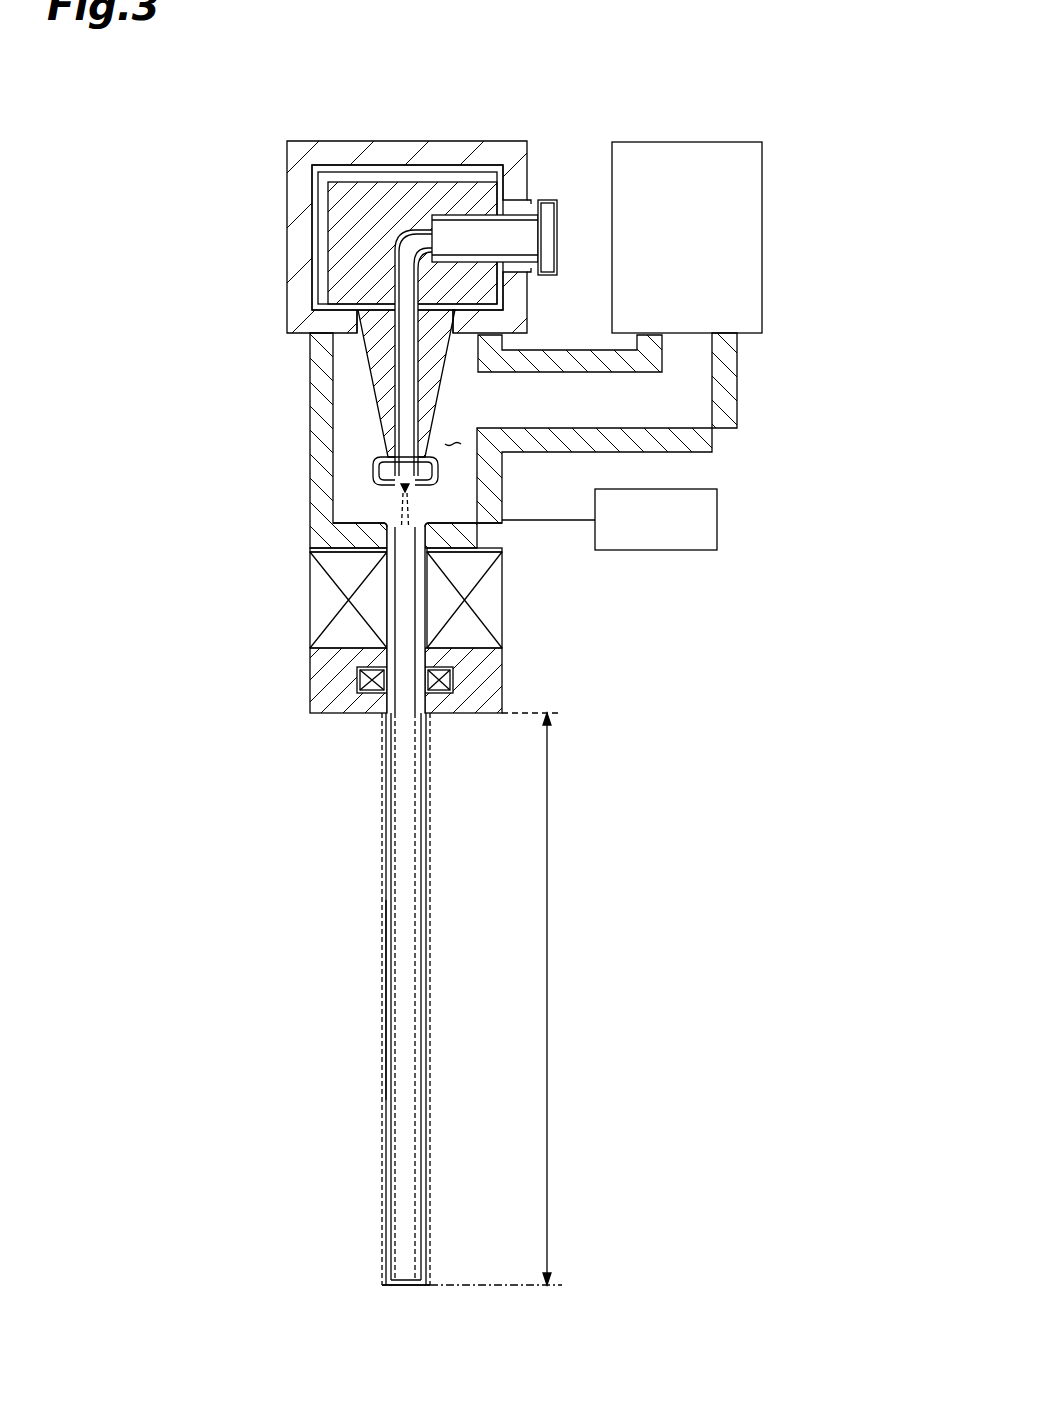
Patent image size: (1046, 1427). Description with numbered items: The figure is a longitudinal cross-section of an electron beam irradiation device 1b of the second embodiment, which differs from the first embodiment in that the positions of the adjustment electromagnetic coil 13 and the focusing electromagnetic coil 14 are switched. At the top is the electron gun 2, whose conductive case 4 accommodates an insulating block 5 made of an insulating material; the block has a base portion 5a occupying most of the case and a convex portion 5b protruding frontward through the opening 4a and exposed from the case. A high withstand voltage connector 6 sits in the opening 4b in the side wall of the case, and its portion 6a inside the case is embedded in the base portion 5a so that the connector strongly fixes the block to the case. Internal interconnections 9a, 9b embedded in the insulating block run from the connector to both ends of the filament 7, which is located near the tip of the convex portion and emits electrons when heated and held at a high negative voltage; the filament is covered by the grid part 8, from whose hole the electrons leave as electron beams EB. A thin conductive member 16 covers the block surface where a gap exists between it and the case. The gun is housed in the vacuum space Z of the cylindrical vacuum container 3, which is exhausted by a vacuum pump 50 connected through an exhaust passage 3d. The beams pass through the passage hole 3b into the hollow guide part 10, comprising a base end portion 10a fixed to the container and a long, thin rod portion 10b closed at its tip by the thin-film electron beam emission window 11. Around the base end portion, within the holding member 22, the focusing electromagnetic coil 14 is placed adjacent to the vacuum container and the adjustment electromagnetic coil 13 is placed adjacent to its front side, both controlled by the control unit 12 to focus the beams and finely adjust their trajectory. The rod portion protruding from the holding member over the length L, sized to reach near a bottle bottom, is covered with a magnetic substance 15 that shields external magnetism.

The electron beam irradiation device 1b is at (797, 133).
The electron gun 2 is at (361, 390).
The vacuum container 3 is at (489, 424).
The passage hole 3b is at (390, 520).
The exhaust passage 3d is at (570, 372).
The case 4 is at (409, 264).
The opening 4a is at (447, 338).
The opening 4b is at (538, 200).
The insulating block 5 is at (338, 319).
The base portion 5a is at (345, 258).
The convex portion 5b is at (333, 383).
The connector 6 is at (557, 201).
The portion 6a is at (474, 215).
The filament 7 is at (400, 490).
The grid part 8 is at (440, 482).
The internal interconnection 9a is at (396, 238).
The internal interconnection 9b is at (418, 250).
The guide part 10 is at (306, 935).
The base end portion 10a is at (385, 607).
The rod portion 10b is at (382, 828).
The electron beam emission window 11 is at (402, 1288).
The control unit 12 is at (655, 552).
The adjustment electromagnetic coil 13 is at (455, 680).
The focusing electromagnetic coil 14 is at (490, 603).
The magnetic substance 15 is at (382, 1078).
The conductive member 16 is at (341, 178).
The holding member 22 is at (312, 556).
The vacuum pump 50 is at (688, 142).
The electron beams EB is at (415, 1075).
The length L is at (498, 999).
The vacuum space Z is at (454, 430).